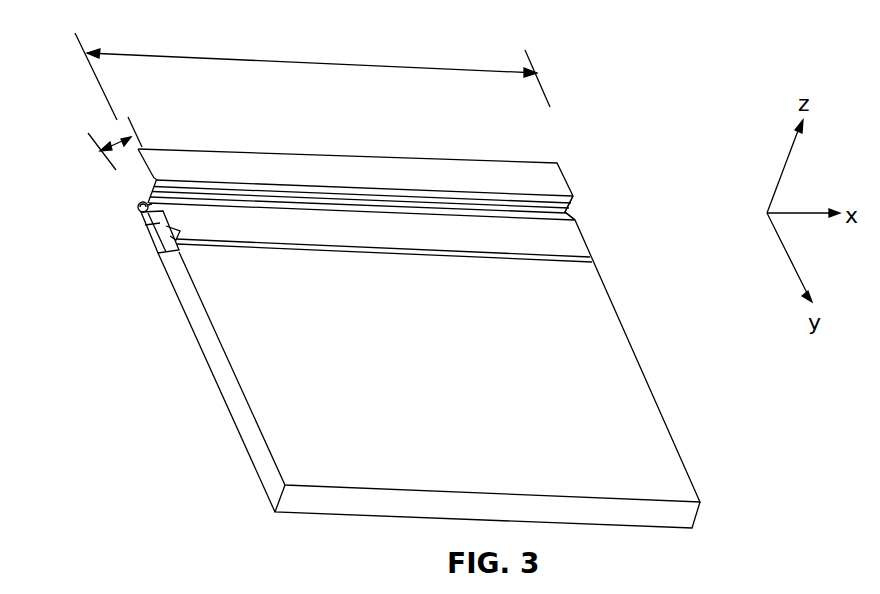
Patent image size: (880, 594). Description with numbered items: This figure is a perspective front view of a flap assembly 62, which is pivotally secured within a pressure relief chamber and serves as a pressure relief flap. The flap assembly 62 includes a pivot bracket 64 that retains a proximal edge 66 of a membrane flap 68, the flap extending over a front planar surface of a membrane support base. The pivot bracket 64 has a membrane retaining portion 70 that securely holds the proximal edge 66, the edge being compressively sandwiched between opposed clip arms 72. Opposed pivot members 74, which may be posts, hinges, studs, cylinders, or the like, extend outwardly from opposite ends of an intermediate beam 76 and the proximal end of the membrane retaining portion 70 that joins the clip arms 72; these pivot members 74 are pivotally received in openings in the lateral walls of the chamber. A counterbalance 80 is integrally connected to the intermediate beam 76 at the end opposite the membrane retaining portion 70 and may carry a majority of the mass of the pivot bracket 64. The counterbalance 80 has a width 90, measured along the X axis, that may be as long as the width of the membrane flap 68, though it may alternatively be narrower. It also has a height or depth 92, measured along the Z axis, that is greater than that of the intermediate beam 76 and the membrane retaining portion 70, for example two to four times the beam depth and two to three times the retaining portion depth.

The flap assembly 62 is at (655, 148).
The pivot bracket 64 is at (515, 162).
The proximal edge 66 is at (176, 212).
The membrane flap 68 is at (625, 390).
The membrane retaining portion 70 is at (172, 272).
The clip arms 72 is at (140, 226).
The pivot members 74 is at (137, 207).
The intermediate beam 76 is at (566, 212).
The counterbalance 80 is at (310, 152).
The width 90 is at (347, 63).
The height or depth 92 is at (110, 166).